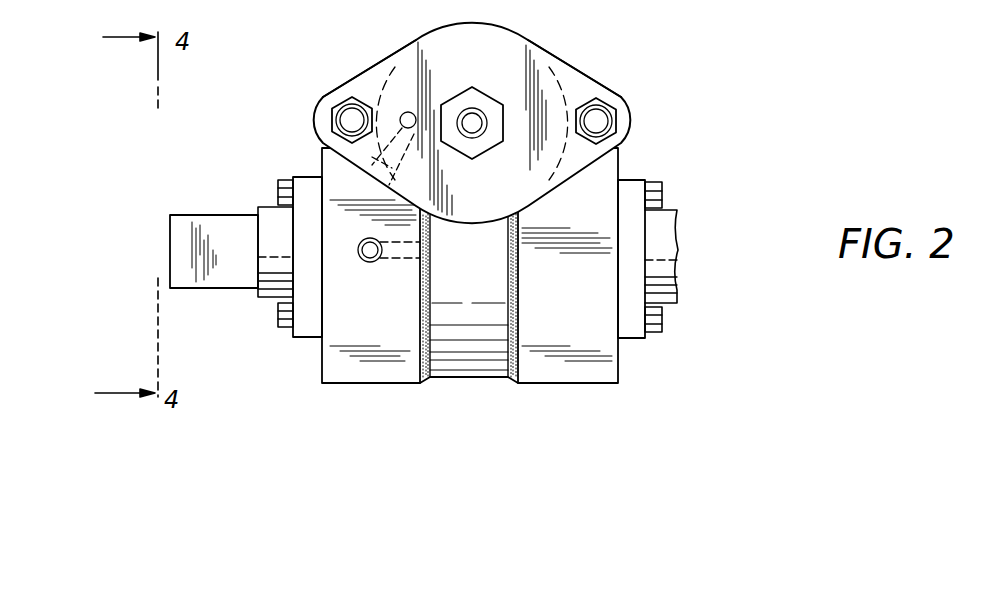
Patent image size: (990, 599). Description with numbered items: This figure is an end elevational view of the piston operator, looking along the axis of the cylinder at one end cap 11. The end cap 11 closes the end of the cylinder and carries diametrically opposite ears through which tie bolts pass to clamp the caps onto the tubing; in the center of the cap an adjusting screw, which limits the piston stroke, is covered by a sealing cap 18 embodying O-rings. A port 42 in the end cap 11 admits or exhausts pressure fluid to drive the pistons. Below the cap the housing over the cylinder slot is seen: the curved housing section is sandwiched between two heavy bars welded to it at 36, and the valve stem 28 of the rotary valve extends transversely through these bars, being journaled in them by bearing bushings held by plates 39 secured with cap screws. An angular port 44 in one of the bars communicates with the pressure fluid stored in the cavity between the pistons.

The end cap 11 is at (518, 40).
The sealing cap 18 is at (477, 100).
The valve stem 28 is at (217, 227).
The weld 36 is at (508, 240).
The plate 39 is at (632, 183).
The port 42 is at (470, 126).
The angular port 44 is at (380, 259).